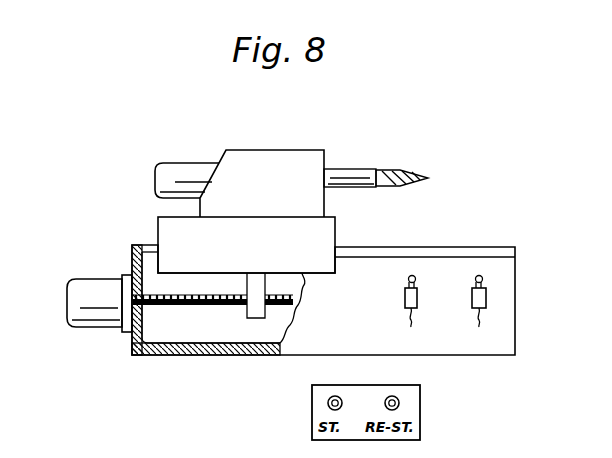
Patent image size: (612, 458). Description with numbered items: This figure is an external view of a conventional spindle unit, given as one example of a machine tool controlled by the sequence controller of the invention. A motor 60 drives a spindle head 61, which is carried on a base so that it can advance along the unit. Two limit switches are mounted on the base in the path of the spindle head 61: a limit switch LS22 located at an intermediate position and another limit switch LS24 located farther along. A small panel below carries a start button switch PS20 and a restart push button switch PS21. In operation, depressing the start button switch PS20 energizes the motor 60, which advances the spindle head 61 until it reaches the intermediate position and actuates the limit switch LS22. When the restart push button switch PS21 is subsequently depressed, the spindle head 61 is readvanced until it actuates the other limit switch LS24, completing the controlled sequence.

The motor 60 is at (104, 290).
The spindle head 61 is at (302, 165).
The limit switch LS22 is at (394, 313).
The limit switch LS24 is at (472, 313).
The start button switch PS20 is at (326, 403).
The restart push button switch PS21 is at (400, 402).